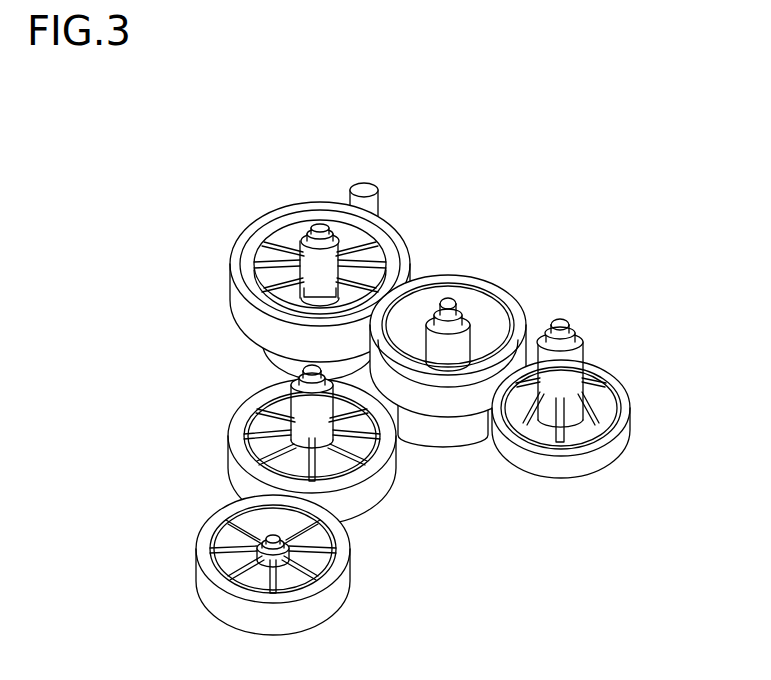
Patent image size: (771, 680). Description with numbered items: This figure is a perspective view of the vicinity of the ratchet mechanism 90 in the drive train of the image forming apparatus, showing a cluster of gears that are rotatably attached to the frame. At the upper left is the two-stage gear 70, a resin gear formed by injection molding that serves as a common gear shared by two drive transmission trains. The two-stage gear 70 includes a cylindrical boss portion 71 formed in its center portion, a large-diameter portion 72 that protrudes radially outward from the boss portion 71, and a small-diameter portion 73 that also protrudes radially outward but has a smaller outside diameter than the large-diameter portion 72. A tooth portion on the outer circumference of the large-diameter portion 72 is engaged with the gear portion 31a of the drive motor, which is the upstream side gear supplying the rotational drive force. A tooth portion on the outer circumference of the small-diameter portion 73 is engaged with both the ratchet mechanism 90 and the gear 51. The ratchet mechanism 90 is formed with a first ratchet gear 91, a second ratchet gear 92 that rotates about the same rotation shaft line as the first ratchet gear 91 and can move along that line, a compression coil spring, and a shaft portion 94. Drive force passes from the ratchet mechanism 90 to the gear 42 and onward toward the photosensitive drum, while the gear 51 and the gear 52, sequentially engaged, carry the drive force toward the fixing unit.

The gear portion 31a is at (364, 190).
The gear 42 is at (612, 455).
The gear 51 is at (240, 444).
The gear 52 is at (205, 560).
The two-stage gear 70 is at (285, 242).
The cylindrical boss portion 71 is at (305, 257).
The large-diameter portion 72 is at (243, 286).
The small-diameter portion 73 is at (275, 364).
The ratchet mechanism 90 is at (470, 377).
The first ratchet gear 91 is at (433, 432).
The second ratchet gear 92 is at (468, 400).
The shaft portion 94 is at (447, 300).